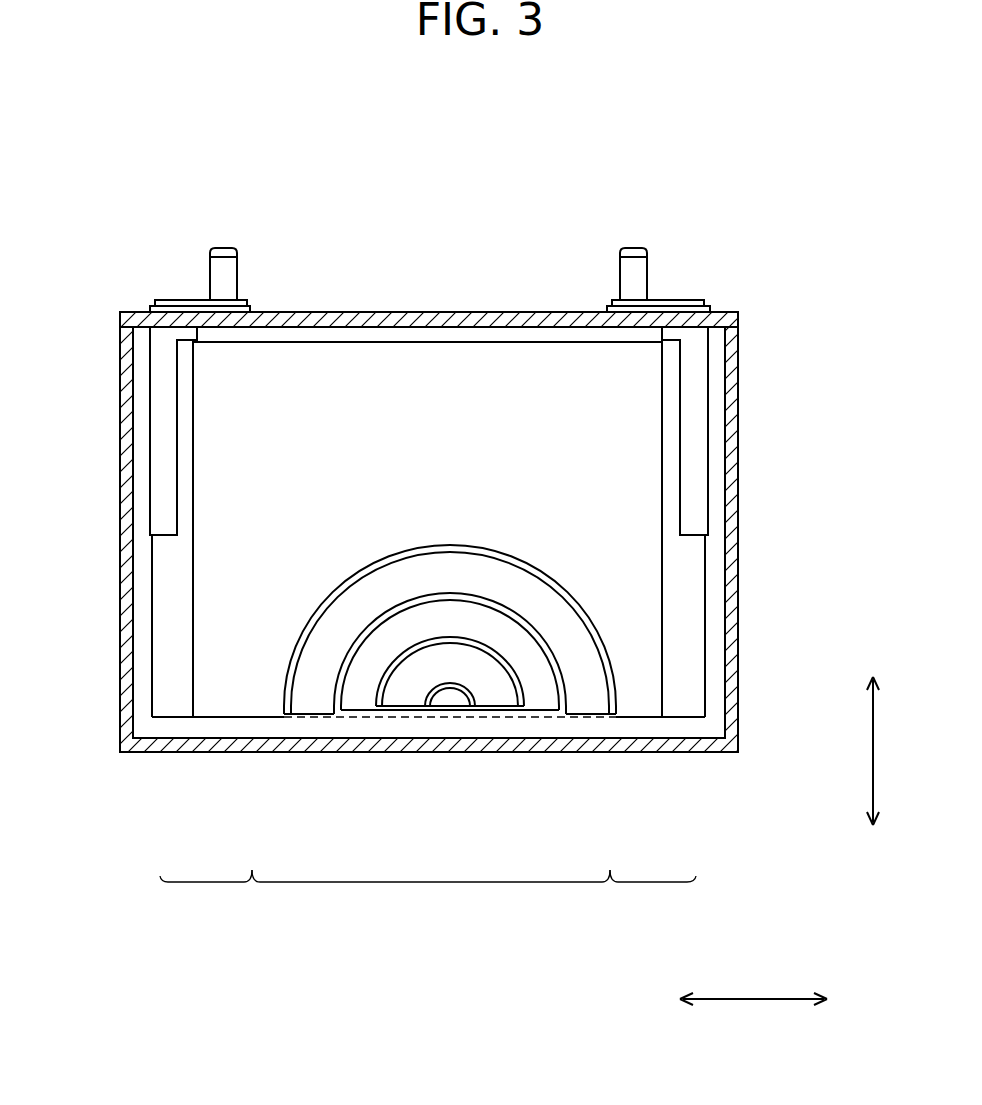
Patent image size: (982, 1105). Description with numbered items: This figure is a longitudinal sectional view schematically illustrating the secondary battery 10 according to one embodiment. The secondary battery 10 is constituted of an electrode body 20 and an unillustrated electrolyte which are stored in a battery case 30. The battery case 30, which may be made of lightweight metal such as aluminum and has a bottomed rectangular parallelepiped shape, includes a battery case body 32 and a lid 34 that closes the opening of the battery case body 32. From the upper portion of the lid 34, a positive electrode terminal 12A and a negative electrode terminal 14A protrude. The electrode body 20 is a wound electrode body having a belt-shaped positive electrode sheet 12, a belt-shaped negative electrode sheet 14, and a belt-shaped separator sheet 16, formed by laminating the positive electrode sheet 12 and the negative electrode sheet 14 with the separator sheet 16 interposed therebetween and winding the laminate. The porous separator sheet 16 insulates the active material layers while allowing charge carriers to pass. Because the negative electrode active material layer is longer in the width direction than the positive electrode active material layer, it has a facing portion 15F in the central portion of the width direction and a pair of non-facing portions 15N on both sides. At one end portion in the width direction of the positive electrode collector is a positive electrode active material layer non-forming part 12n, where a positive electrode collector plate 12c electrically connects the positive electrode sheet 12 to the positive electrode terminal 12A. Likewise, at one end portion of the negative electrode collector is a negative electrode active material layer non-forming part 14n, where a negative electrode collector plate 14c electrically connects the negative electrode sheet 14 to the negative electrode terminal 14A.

The secondary battery 10 is at (741, 268).
The positive electrode sheet 12 is at (300, 697).
The positive electrode terminal 12A is at (223, 246).
The positive electrode collector plate 12c is at (163, 416).
The positive electrode active material layer non-forming part 12n is at (173, 601).
The negative electrode sheet 14 is at (388, 698).
The negative electrode terminal 14A is at (633, 246).
The negative electrode collector plate 14c is at (692, 368).
The negative electrode active material layer non-forming part 14n is at (690, 603).
The non-facing portions 15N is at (428, 899).
The facing portion 15F is at (431, 899).
The separator sheet 16 is at (236, 700).
The electrode body 20 is at (645, 722).
The battery case 30 is at (740, 436).
The battery case body 32 is at (730, 548).
The lid 34 is at (548, 310).